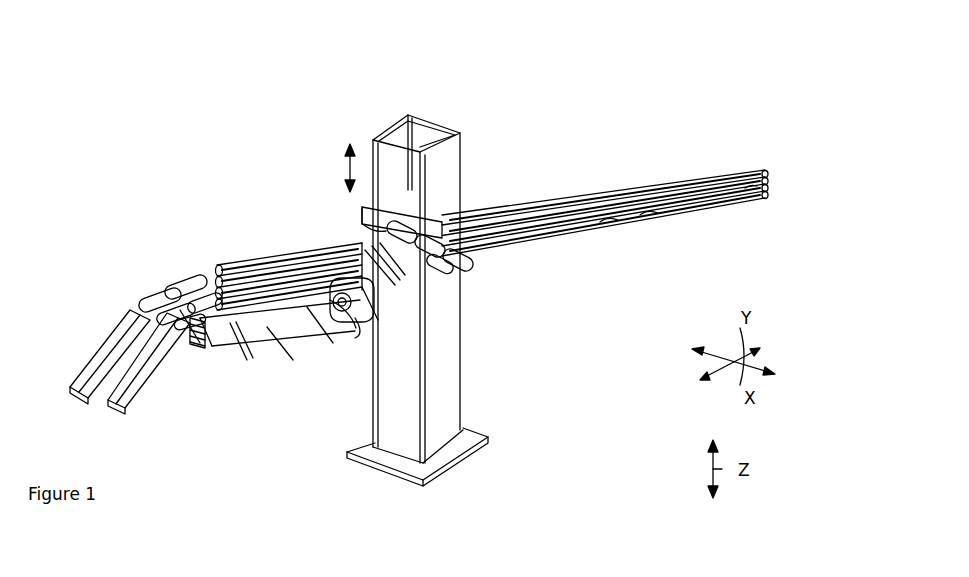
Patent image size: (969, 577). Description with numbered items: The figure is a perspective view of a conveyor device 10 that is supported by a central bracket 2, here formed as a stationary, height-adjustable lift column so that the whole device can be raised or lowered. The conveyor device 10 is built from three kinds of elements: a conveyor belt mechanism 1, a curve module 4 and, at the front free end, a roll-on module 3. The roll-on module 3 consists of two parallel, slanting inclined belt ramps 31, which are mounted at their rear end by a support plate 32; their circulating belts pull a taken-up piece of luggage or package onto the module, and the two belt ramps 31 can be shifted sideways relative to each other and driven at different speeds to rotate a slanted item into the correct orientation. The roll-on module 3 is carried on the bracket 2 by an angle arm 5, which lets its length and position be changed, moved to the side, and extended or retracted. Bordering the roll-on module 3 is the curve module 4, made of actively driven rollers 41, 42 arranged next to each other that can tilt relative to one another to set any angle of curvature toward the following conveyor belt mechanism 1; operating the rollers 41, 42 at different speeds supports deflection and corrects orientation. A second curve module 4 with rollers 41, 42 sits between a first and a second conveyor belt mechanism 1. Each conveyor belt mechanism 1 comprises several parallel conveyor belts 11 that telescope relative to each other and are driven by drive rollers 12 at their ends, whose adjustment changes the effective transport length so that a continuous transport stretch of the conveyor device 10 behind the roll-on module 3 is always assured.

The conveyor device 10 is at (508, 70).
The conveyor belt mechanism 1 is at (622, 157).
The bracket 2 is at (458, 372).
The roll-on module 3 is at (85, 337).
The curve module 4 is at (456, 172).
The angle arm 5 is at (290, 332).
The conveyor belts 11 is at (526, 196).
The drive rollers 12 is at (765, 200).
The inclined belt ramps 31 is at (72, 392).
The support plate 32 is at (200, 352).
The rollers 41 is at (189, 272).
The rollers 42 is at (226, 322).